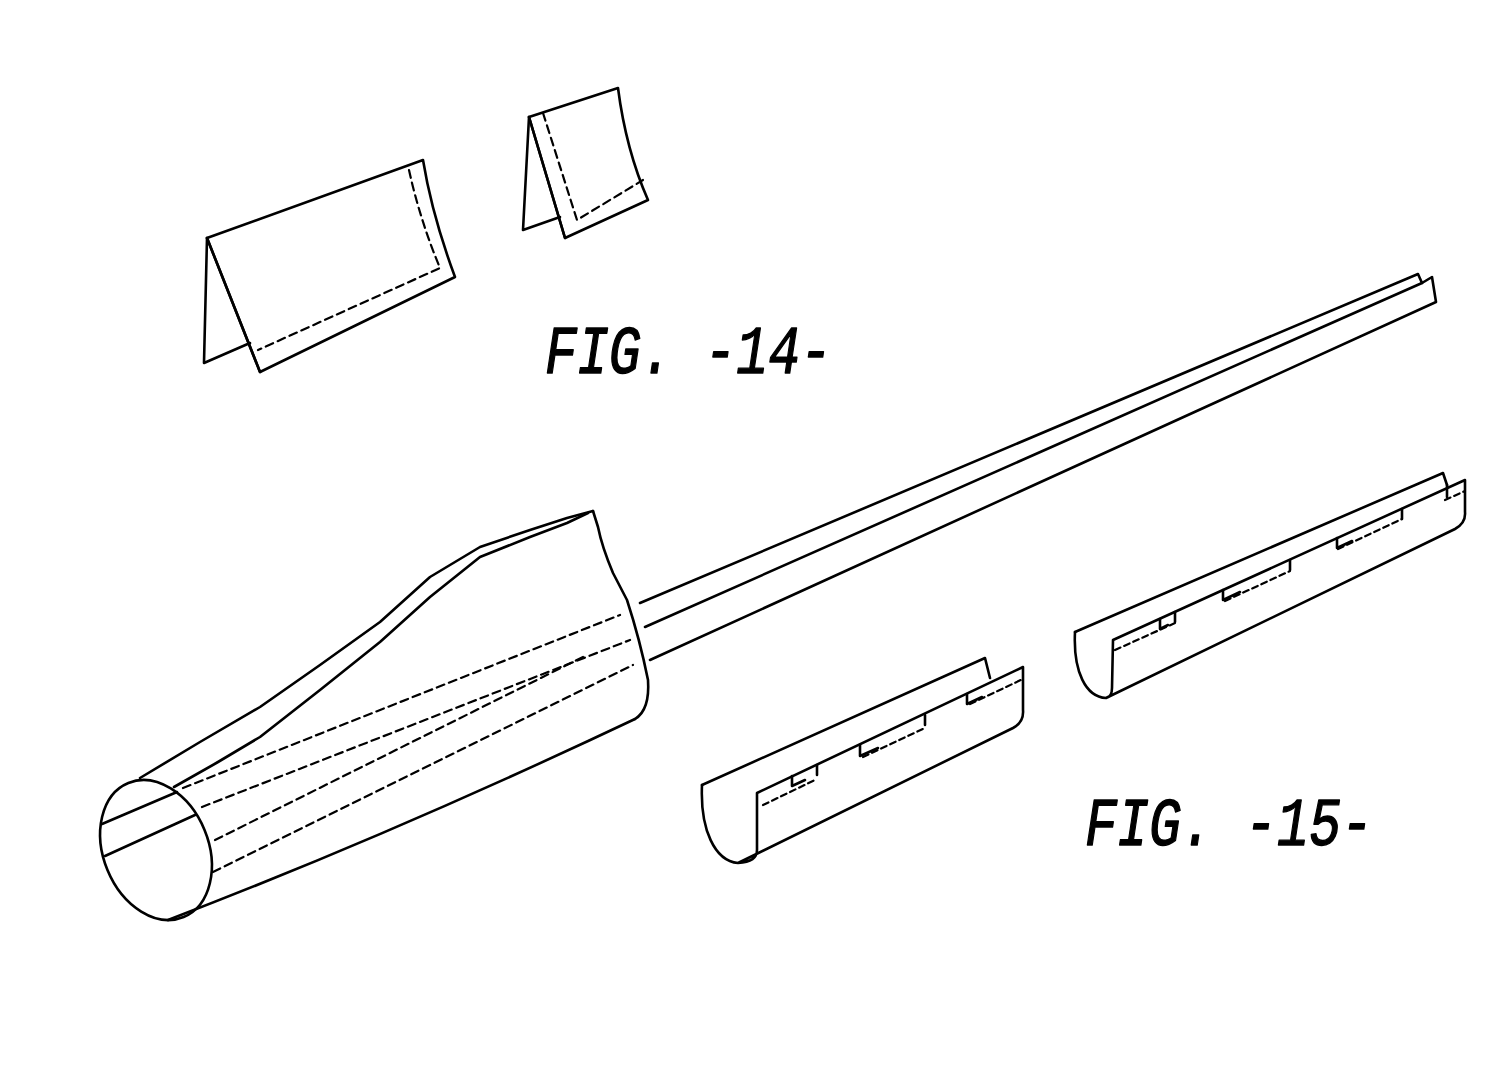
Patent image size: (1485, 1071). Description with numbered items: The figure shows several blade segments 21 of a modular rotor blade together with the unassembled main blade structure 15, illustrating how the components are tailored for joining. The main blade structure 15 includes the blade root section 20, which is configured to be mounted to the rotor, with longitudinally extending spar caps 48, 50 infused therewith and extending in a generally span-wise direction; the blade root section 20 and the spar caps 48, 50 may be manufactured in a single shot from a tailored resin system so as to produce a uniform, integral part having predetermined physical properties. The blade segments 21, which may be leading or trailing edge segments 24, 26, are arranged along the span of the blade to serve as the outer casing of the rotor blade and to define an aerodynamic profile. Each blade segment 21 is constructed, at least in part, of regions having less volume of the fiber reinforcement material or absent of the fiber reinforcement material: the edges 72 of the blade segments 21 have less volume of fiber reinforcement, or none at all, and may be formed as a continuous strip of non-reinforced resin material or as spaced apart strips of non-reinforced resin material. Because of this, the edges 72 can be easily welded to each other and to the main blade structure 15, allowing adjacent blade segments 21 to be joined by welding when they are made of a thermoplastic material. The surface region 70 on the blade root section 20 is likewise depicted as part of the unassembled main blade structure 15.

In FIG. 15, the main blade structure 15 is at (758, 605).
In FIG. 15, the blade root section 20 is at (355, 850).
In FIG. 14, the blade segments 21 is at (428, 186).
In FIG. 15, the blade segments 21 is at (1083, 682).
In FIG. 15, the leading edge segment 24 is at (882, 792).
In FIG. 14, the trailing edge segment 26 is at (305, 200).
In FIG. 15, the spar cap 48 is at (1038, 467).
In FIG. 15, the spar cap 50 is at (1017, 475).
In FIG. 15, the flat surface 70 is at (520, 585).
In FIG. 14, the edges 72 is at (390, 300).
In FIG. 15, the edges 72 is at (793, 778).